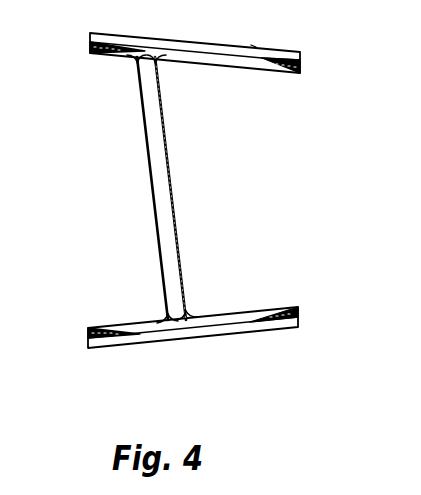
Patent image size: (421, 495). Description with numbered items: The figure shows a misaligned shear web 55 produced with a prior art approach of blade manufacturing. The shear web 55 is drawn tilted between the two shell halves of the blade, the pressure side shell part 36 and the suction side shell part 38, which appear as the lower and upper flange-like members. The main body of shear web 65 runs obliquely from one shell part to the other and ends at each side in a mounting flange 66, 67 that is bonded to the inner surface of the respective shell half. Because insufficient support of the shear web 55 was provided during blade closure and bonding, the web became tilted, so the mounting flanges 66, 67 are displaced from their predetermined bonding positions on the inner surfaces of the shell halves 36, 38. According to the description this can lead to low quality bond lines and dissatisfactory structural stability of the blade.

The suction side shell part 38 is at (221, 46).
The pressure side shell part 36 is at (216, 333).
The second shear web 55 is at (175, 188).
The main body of shear web 65 is at (157, 207).
The mounting flange 66 is at (124, 55).
The mounting flange 67 is at (152, 325).